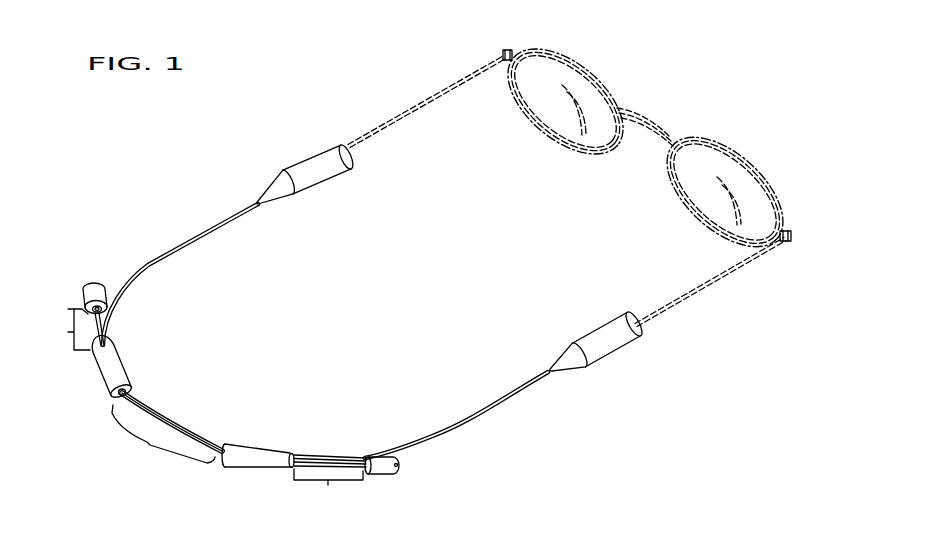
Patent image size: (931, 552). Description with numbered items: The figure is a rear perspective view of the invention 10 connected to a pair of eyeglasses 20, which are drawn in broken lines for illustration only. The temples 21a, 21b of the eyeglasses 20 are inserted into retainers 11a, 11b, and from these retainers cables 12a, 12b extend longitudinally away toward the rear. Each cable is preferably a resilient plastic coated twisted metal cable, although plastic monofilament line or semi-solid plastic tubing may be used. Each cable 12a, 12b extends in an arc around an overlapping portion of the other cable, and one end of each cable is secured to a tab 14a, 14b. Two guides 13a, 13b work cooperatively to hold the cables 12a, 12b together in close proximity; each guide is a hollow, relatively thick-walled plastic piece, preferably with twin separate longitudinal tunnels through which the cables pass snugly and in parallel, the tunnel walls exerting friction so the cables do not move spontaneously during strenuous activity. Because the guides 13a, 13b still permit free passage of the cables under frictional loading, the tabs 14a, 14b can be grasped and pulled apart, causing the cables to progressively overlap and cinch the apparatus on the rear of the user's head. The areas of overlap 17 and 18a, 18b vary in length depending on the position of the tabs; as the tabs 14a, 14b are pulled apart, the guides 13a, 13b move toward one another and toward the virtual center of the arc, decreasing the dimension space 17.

The invention 10 is at (176, 479).
The retainer 11a is at (612, 354).
The retainer 11b is at (287, 164).
The cable 12a is at (463, 428).
The cable 12b is at (188, 242).
The guide 13a is at (265, 452).
The guide 13b is at (110, 362).
The tab 14a is at (92, 285).
The tab 14b is at (398, 468).
The area of overlap 17 is at (148, 443).
The area of overlap 18a is at (61, 329).
The area of overlap 18b is at (328, 494).
The pair of eyeglasses 20 is at (658, 122).
The temple 21a is at (690, 298).
The temple 21b is at (413, 103).